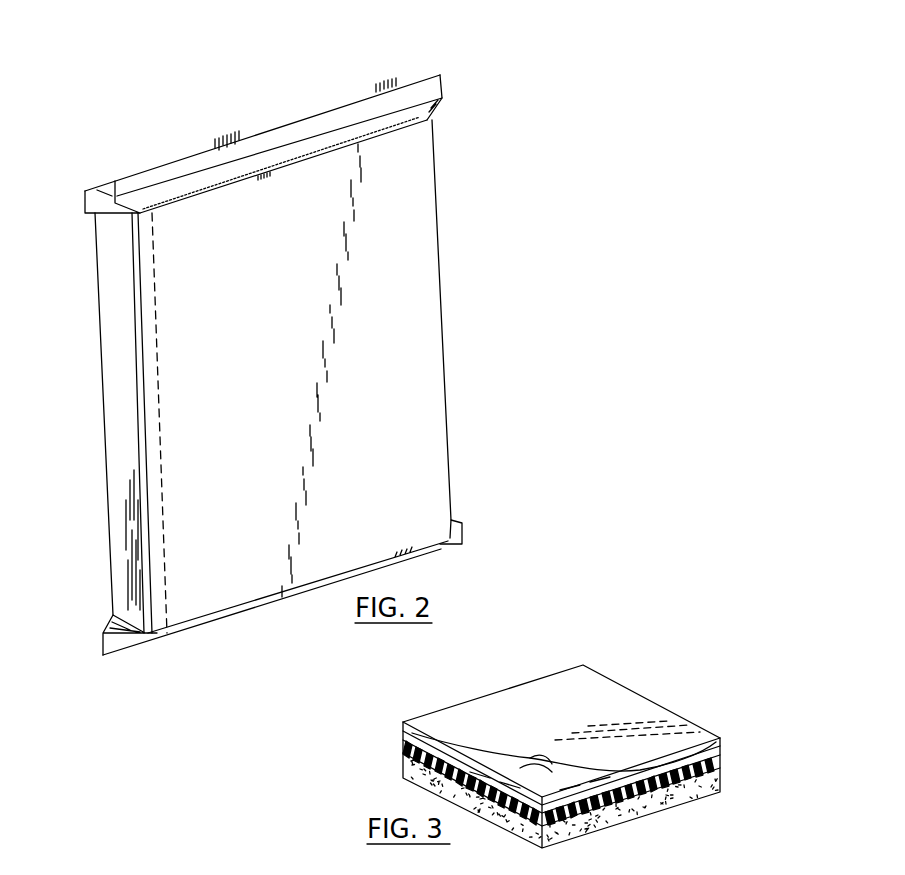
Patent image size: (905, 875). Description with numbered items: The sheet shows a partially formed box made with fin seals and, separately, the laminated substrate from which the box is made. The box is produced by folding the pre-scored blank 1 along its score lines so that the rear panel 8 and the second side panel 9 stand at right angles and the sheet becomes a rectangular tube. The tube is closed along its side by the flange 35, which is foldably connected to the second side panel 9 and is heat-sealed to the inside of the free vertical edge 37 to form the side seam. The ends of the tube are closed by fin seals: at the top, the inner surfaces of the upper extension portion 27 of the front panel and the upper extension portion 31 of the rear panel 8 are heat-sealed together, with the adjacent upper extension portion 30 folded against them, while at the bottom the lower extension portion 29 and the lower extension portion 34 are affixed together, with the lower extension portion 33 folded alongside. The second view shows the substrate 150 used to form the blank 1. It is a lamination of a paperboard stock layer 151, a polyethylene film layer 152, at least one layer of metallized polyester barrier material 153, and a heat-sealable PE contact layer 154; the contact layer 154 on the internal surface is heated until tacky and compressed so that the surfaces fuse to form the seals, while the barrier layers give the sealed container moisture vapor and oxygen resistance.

In FIG. 2, the blank 1 is at (446, 374).
In FIG. 2, the rear panel 8 is at (309, 358).
In FIG. 2, the second side panel 9 is at (120, 440).
In FIG. 2, the upper extension portion 27 is at (93, 185).
In FIG. 2, the lower extension portion 29 is at (105, 647).
In FIG. 2, the upper extension portion 30 is at (424, 122).
In FIG. 2, the upper extension portion 31 is at (392, 103).
In FIG. 2, the lower extension portion 33 is at (440, 552).
In FIG. 2, the lower extension portion 34 is at (138, 640).
In FIG. 2, the flange 35 is at (152, 349).
In FIG. 2, the free vertical edge 37 is at (138, 320).
In FIG. 3, the substrate 150 is at (632, 690).
In FIG. 3, the paperboard stock layer 151 is at (702, 792).
In FIG. 3, the polyethylene film layer 152 is at (717, 768).
In FIG. 3, the metallized polyester barrier material layer 153 is at (717, 752).
In FIG. 3, the heat-sealable PE contact layer 154 is at (522, 765).